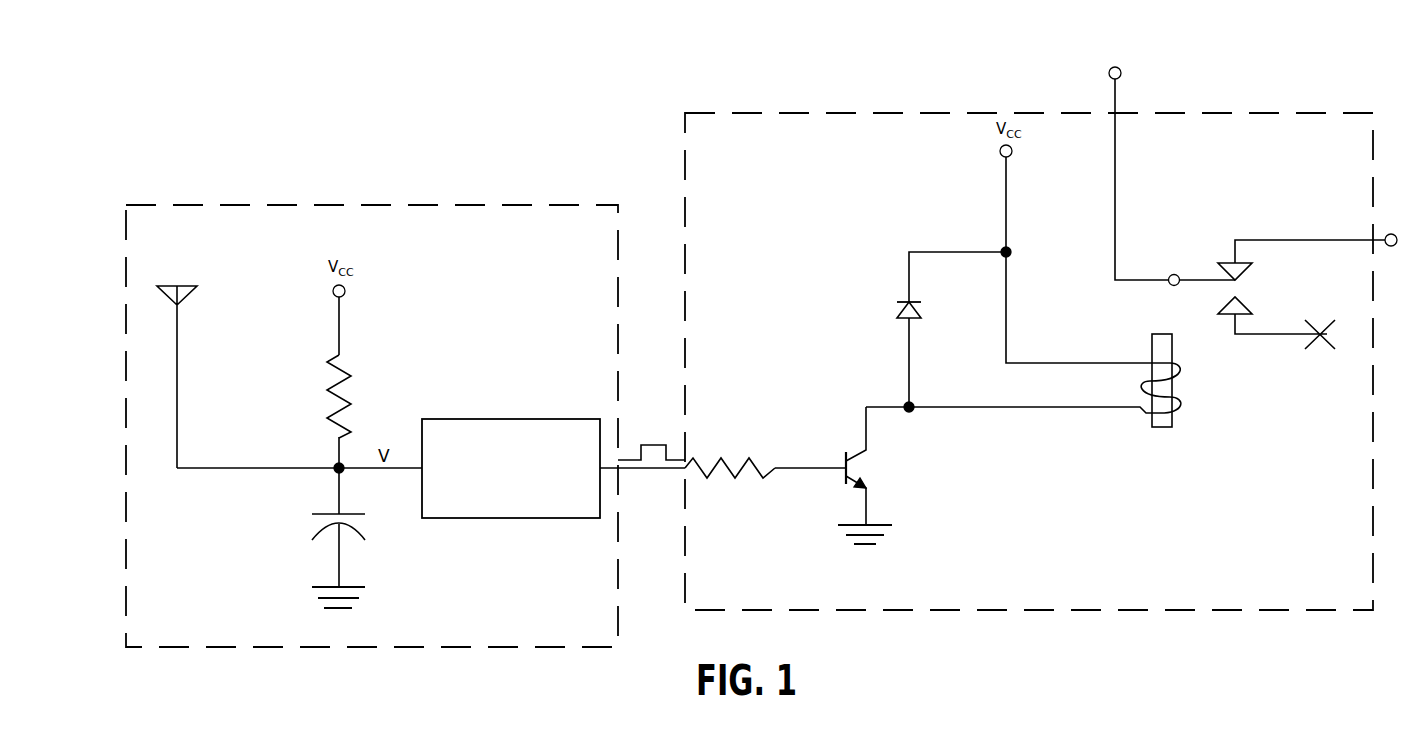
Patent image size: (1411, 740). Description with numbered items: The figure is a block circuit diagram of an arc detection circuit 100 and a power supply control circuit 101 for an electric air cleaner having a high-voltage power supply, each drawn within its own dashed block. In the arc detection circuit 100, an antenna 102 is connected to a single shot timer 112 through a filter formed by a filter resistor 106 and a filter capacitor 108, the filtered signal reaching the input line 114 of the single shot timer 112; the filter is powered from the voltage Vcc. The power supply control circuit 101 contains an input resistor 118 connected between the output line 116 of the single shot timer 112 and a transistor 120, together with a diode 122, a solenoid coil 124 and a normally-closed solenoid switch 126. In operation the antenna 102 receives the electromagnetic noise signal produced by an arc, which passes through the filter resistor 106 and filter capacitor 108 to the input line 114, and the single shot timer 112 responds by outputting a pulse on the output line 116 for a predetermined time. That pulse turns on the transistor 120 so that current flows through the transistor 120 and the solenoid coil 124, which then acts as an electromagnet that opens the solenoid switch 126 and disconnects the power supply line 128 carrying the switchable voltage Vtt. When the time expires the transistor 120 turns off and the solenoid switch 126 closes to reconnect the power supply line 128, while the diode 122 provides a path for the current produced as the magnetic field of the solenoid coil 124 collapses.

The arc detection circuit 100 is at (393, 204).
The power supply control circuit 101 is at (757, 112).
The antenna 102 is at (190, 284).
The filter resistor 106 is at (343, 372).
The filter capacitor 108 is at (313, 523).
The single shot timer 112 is at (511, 520).
The input line 114 is at (382, 470).
The output line 116 is at (636, 472).
The input resistor 118 is at (720, 463).
The transistor 120 is at (845, 471).
The diode 122 is at (897, 304).
The solenoid coil 124 is at (1175, 403).
The normally-closed solenoid switch 126 is at (1192, 279).
The power supply line 128 is at (1116, 89).